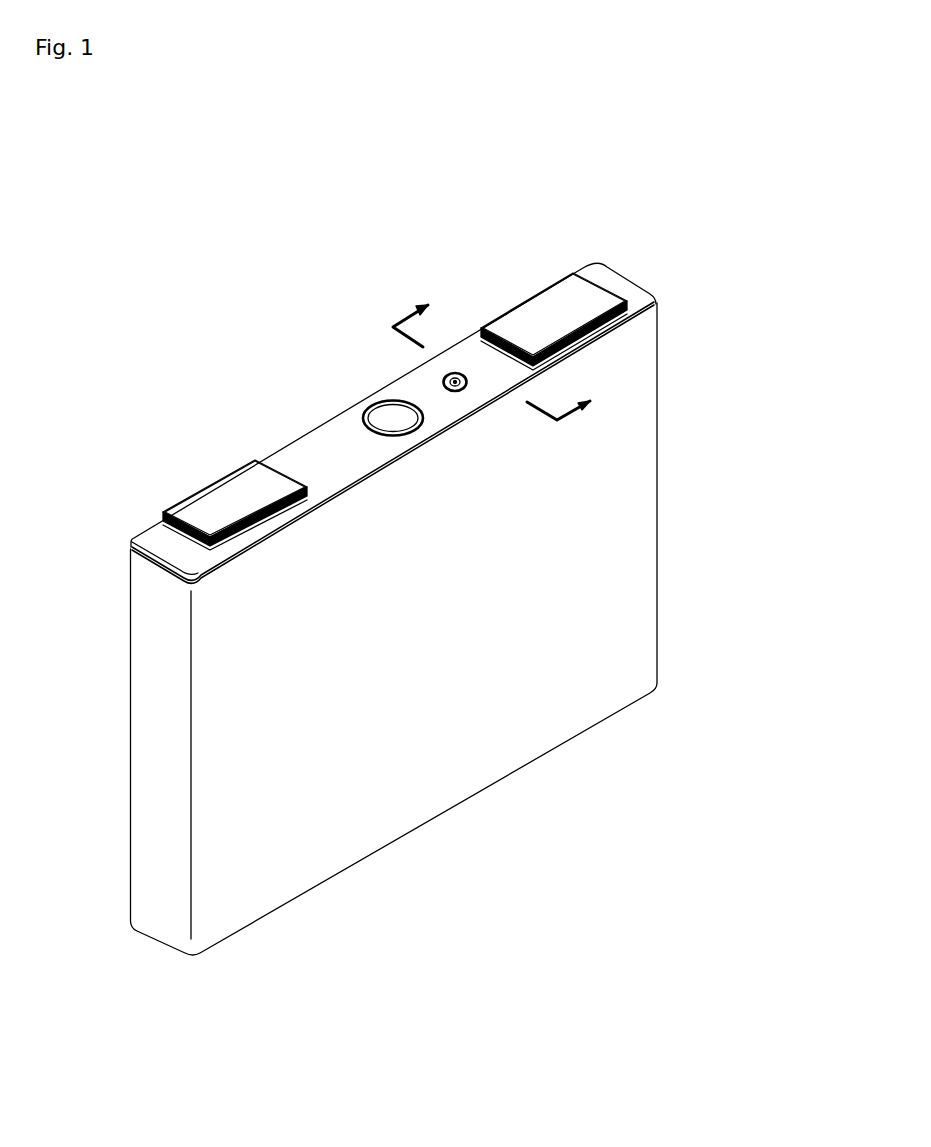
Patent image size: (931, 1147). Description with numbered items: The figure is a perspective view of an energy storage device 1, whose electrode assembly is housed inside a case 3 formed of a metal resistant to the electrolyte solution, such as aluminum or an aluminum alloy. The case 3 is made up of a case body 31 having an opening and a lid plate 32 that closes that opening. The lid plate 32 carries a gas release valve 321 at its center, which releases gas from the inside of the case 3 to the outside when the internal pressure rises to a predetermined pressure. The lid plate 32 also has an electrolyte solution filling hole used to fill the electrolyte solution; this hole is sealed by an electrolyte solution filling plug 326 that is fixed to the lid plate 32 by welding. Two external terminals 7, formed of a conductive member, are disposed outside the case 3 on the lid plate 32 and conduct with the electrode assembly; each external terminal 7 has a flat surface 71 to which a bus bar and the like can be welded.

The energy storage device 1 is at (655, 171).
The case 3 is at (781, 366).
The case body 31 is at (630, 476).
The lid plate 32 is at (647, 280).
The gas release valve 321 is at (375, 403).
The electrolyte solution filling plug 326 is at (444, 376).
The external terminal 7 is at (217, 503).
The surface 71 is at (250, 487).